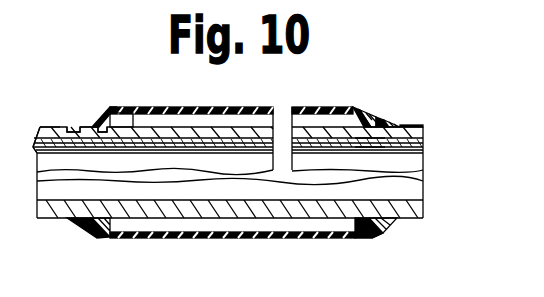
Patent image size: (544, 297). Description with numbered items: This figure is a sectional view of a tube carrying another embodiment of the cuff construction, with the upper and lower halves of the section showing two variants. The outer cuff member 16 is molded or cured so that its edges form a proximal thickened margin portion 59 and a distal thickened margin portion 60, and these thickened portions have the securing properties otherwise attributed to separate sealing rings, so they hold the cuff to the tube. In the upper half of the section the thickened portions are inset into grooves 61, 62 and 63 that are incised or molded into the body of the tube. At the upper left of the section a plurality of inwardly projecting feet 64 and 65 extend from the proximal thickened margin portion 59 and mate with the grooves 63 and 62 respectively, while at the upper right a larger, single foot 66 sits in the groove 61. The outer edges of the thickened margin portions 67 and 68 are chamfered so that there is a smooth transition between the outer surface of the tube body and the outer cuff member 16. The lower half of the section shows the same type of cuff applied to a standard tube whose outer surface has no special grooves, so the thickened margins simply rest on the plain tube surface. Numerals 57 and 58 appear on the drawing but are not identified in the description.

The outer cuff member 16 is at (240, 108).
The inner conductor 57 is at (3, 130).
The dielectric layer 58 is at (30, 85).
The proximal thickened margin portion 59 is at (78, 128).
The distal thickened margin portion 60 is at (370, 124).
The groove 61 is at (372, 131).
The groove 62 is at (106, 131).
The groove 63 is at (82, 128).
The inwardly projecting foot 64 is at (68, 126).
The inwardly projecting foot 65 is at (112, 131).
The single foot 66 is at (388, 124).
The chamfered outer edge of thickened margin portion 67 is at (400, 125).
The chamfered outer edge of thickened margin portion 68 is at (356, 107).